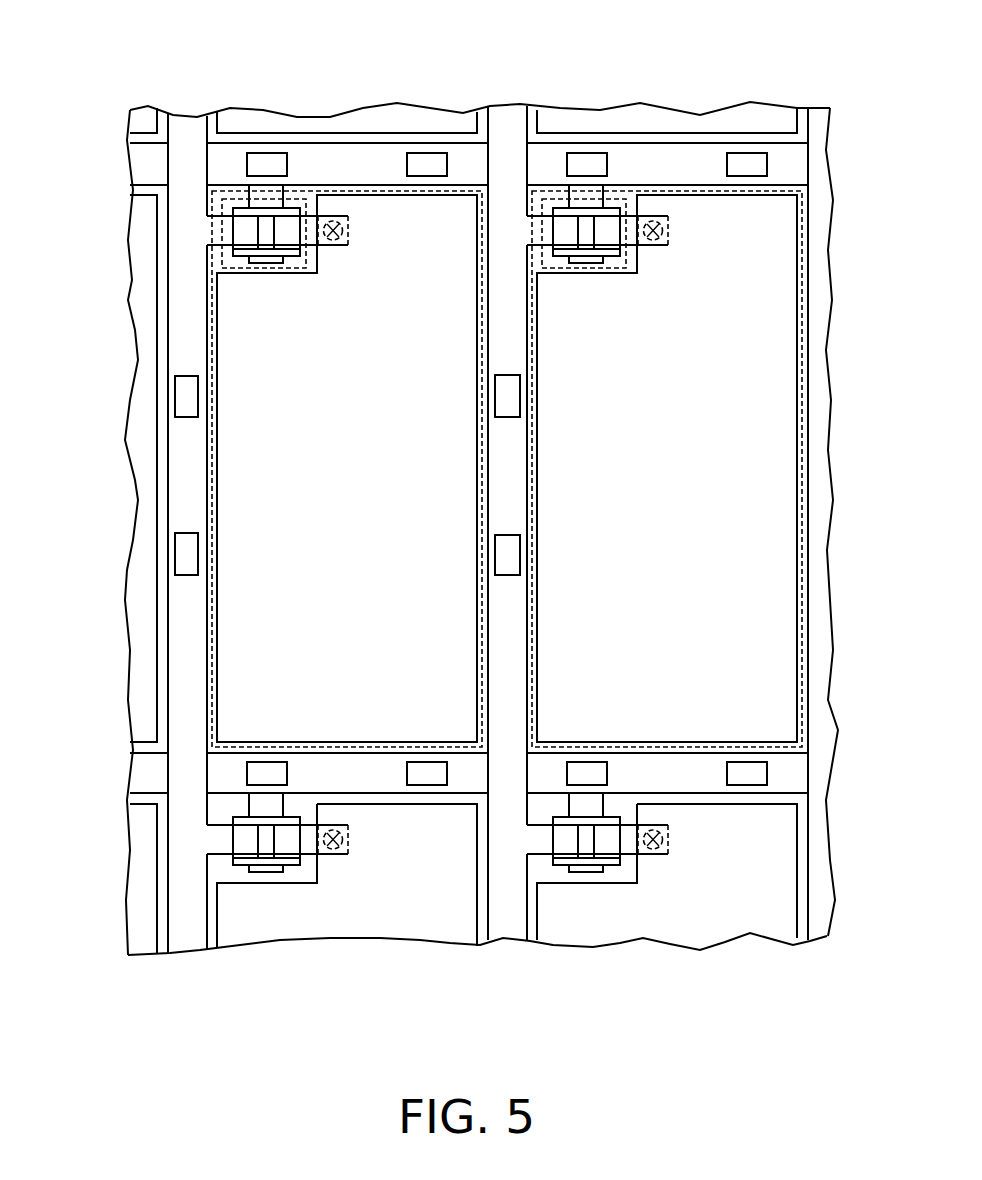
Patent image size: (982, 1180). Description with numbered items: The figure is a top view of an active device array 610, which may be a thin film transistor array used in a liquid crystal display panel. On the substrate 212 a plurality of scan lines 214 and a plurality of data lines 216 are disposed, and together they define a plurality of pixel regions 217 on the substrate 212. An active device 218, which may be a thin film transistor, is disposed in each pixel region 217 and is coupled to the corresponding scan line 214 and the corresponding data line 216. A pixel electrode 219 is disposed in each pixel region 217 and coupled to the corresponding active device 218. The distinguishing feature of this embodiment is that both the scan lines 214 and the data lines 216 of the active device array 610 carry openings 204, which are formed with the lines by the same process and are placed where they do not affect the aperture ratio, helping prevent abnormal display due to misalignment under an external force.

The data line 216 is at (188, 133).
The substrate 212 is at (667, 107).
The scan line 214 is at (393, 160).
The pixel region 217 is at (448, 178).
The active device 218 is at (237, 197).
The pixel electrode 219 is at (363, 213).
The opening 204 is at (748, 164).
The active device array 610 is at (768, 1003).